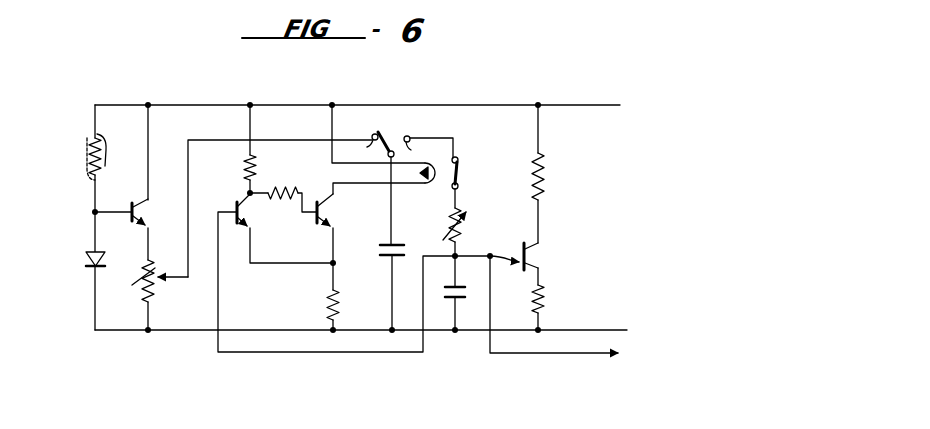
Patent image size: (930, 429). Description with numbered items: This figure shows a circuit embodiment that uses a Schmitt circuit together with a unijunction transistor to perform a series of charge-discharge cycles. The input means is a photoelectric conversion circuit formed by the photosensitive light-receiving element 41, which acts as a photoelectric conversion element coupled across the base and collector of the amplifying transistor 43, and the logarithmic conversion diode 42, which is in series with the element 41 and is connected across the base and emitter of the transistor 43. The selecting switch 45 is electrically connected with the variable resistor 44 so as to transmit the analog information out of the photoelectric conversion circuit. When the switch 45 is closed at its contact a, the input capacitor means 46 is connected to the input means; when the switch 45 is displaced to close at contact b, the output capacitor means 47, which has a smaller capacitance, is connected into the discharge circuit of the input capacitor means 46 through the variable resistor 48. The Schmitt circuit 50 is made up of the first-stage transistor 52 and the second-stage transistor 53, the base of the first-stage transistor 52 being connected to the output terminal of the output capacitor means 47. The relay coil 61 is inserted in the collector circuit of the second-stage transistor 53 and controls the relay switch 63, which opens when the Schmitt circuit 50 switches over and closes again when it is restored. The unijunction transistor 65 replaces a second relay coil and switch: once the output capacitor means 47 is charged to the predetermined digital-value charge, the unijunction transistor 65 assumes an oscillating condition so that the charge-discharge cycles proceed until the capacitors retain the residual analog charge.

The photosensitive light-receiving element 41 is at (107, 162).
The logarithmic conversion diode 42 is at (88, 273).
The amplifying transistor 43 is at (133, 226).
The variable resistor 44 is at (152, 284).
The selecting switch 45 is at (394, 136).
The input capacitor means 46 is at (389, 257).
The output capacitor means 47 is at (452, 298).
The variable resistor 48 is at (463, 222).
The Schmitt circuit 50 is at (281, 253).
The first-stage transistor 52 is at (234, 190).
The second-stage transistor 53 is at (303, 244).
The relay coil 61 is at (421, 186).
The relay switch 63 is at (459, 172).
The unijunction transistor 65 is at (533, 253).